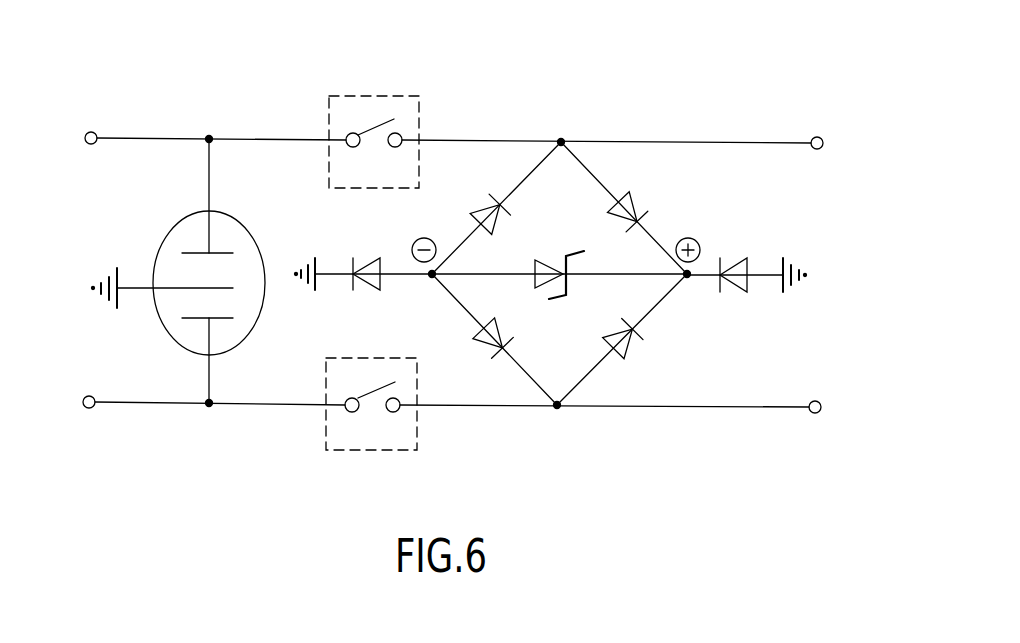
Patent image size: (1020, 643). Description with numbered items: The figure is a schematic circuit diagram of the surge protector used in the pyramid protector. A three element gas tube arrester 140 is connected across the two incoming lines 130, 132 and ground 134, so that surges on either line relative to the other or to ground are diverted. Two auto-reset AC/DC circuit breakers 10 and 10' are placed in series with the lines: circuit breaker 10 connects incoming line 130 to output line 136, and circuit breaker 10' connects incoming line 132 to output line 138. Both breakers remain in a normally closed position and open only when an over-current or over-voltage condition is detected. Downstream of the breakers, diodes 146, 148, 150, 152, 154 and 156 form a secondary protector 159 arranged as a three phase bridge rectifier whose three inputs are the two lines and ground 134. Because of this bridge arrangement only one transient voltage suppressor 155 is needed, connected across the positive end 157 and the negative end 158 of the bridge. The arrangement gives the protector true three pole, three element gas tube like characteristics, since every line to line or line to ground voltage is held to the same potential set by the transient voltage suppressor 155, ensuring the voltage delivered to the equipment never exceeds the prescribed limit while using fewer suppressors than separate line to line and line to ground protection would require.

The auto-reset AC/DC circuit breaker 10 is at (371, 438).
The auto-reset AC/DC circuit breaker 10' is at (375, 105).
The incoming line 130 is at (209, 135).
The incoming line 132 is at (209, 405).
The ground 134 is at (104, 306).
The line 136 is at (747, 142).
The line 138 is at (780, 408).
The three element gas tube arrester 140 is at (167, 337).
The diode 146 is at (649, 208).
The diode 148 is at (630, 352).
The diode 150 is at (750, 262).
The diode 152 is at (477, 208).
The diode 154 is at (483, 345).
The transient voltage suppressor 155 is at (548, 262).
The diode 156 is at (368, 260).
The positive end of the bridge 157 is at (688, 278).
The negative end of the bridge 158 is at (431, 278).
The secondary protector 159 is at (560, 186).